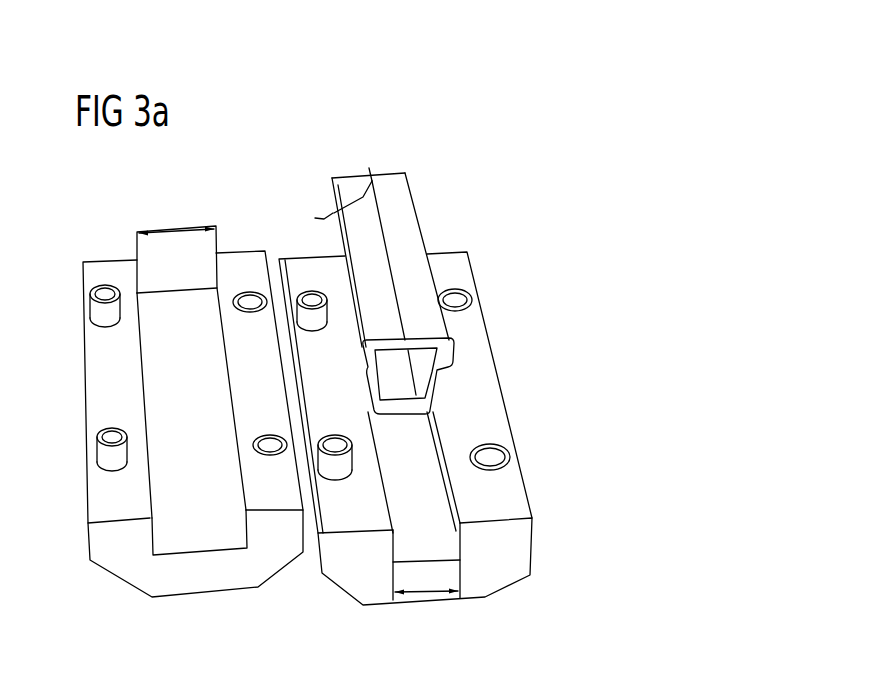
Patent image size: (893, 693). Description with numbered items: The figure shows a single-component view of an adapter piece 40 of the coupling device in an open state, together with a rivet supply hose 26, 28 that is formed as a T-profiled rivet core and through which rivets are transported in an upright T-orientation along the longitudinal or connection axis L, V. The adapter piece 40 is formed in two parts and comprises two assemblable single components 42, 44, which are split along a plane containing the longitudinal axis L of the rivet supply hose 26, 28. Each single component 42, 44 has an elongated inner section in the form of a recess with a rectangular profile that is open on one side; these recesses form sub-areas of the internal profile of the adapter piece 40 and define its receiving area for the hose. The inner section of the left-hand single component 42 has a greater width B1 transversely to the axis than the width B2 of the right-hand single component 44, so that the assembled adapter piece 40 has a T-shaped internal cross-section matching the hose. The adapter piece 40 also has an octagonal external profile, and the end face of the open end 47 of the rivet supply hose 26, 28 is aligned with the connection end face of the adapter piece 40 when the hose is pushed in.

The adapter piece 40 is at (310, 389).
The single component 42 is at (193, 425).
The single component 44 is at (503, 560).
The open end 47 is at (446, 376).
The rivet supply hose 26 is at (422, 281).
The rivet supply hose 28 is at (422, 281).
The width B1 is at (176, 222).
The width B2 is at (426, 581).